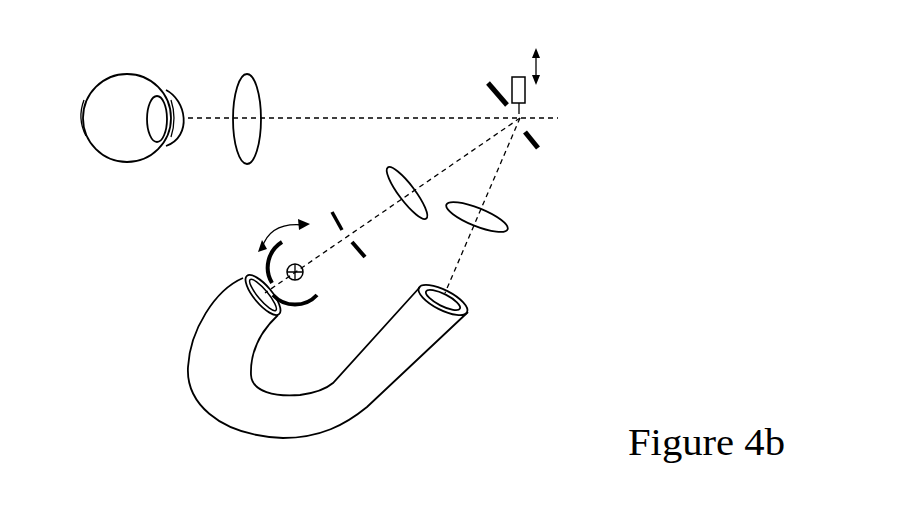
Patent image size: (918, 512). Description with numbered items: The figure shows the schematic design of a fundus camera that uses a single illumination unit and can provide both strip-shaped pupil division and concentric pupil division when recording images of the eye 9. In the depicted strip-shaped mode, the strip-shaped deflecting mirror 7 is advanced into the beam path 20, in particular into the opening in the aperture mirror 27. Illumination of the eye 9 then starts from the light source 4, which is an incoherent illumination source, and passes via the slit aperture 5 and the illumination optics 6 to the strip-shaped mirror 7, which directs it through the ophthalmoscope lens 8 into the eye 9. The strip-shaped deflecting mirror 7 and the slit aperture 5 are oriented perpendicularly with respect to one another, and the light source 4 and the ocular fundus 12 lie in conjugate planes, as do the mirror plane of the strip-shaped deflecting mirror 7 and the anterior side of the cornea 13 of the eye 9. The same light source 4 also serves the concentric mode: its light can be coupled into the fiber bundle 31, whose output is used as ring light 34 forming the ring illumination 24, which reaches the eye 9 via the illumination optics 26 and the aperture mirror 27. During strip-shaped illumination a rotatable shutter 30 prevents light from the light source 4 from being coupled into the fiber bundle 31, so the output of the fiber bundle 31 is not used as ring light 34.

The light source 4 is at (305, 275).
The slit aperture 5 is at (333, 213).
The illumination optics 6 is at (392, 175).
The strip-shaped deflecting mirror 7 is at (520, 118).
The ophthalmoscope lens 8 is at (250, 107).
The eye 9 is at (133, 118).
The ocular fundus 12 is at (85, 118).
The cornea 13 is at (183, 128).
The beam path 20 is at (558, 118).
The ring illumination 24 is at (455, 323).
The illumination optics 26 is at (487, 230).
The aperture mirror 27 is at (538, 148).
The rotatable shutter 30 is at (317, 300).
The fiber bundle 31 is at (385, 380).
The ring light 34 is at (244, 274).